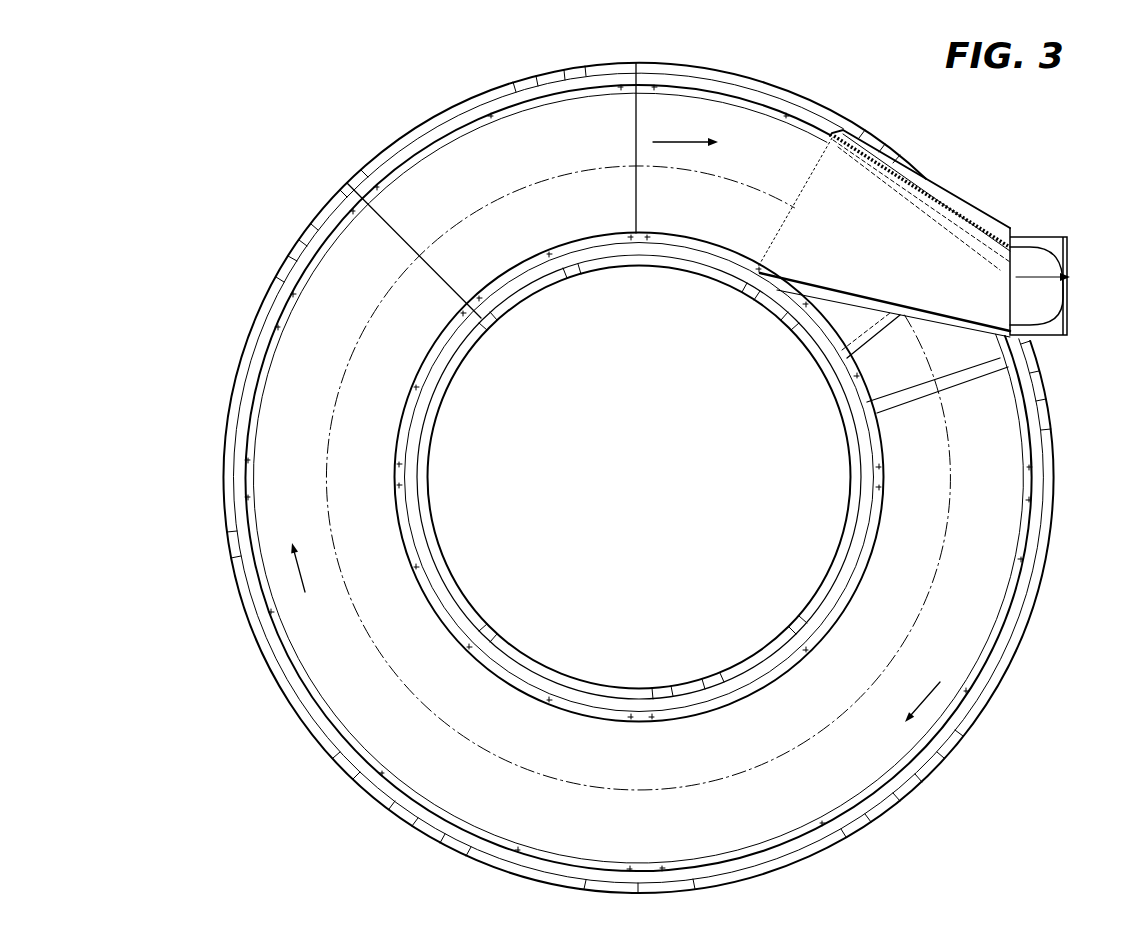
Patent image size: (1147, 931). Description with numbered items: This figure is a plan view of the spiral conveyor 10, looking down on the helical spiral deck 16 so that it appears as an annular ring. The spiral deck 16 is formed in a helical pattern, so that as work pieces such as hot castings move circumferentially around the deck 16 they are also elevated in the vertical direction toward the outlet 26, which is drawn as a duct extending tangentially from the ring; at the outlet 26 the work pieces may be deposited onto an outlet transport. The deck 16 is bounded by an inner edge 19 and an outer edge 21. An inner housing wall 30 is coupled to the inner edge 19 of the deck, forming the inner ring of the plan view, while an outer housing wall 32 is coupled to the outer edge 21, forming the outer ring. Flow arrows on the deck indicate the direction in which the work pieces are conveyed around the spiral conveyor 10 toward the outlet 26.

The spiral conveyor 10 is at (286, 152).
The spiral deck 16 is at (303, 369).
The inner edge 19 is at (428, 376).
The outer edge 21 is at (291, 292).
The outlet 26 is at (1040, 258).
The inner housing wall 30 is at (410, 437).
The outer housing wall 32 is at (239, 455).